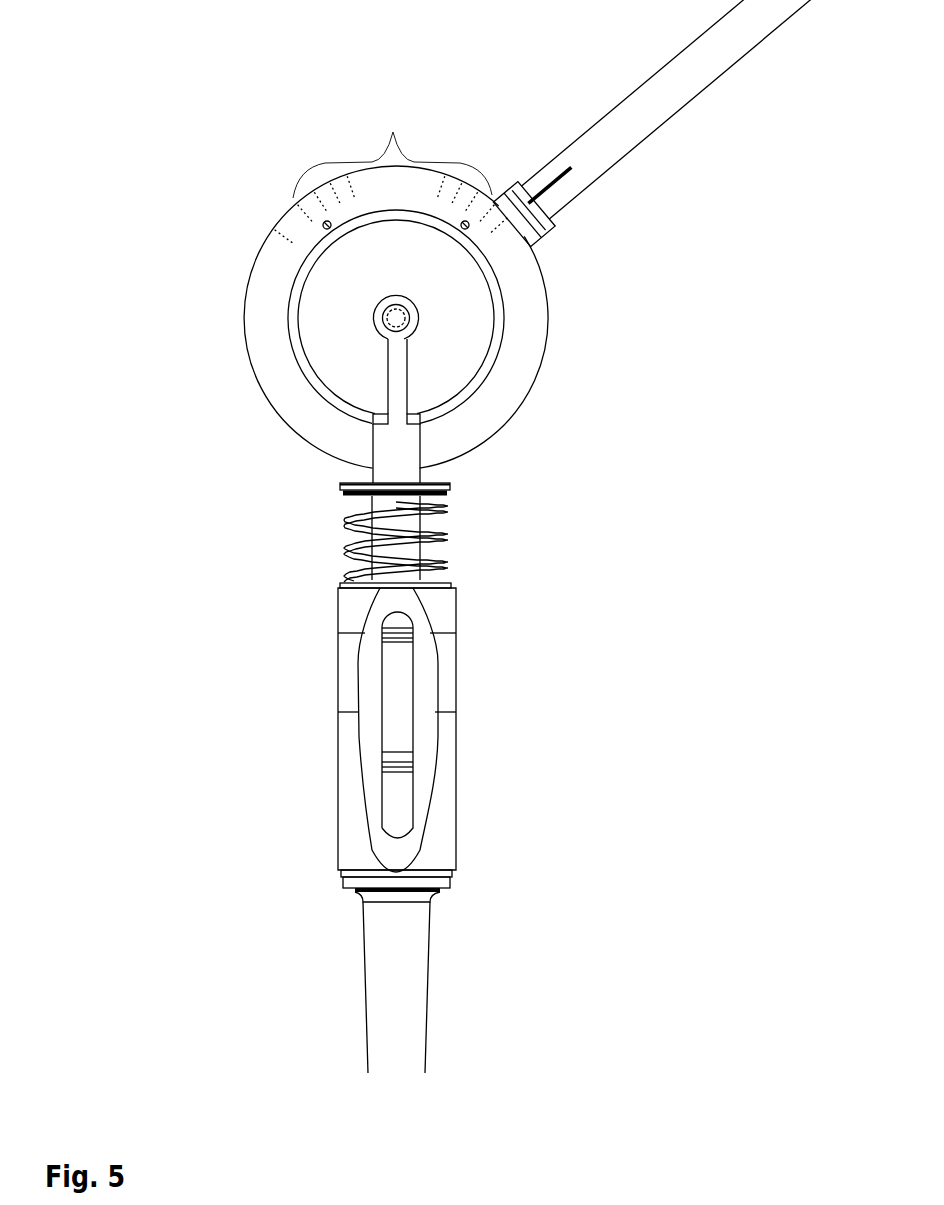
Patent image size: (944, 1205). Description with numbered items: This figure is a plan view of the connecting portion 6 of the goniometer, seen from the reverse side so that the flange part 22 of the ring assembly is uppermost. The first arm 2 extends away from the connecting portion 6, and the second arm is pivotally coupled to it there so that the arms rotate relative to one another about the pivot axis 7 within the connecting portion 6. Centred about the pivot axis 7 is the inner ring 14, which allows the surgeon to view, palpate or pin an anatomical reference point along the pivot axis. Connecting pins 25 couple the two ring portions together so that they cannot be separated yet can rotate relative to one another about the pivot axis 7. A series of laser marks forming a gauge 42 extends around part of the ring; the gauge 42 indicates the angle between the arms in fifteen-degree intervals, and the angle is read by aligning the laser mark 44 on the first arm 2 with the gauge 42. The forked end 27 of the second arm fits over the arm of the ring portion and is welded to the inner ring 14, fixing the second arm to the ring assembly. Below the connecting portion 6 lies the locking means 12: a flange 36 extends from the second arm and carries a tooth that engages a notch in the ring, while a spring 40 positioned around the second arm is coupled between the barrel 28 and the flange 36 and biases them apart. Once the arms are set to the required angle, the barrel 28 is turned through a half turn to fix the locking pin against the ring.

The first arm 2 is at (703, 55).
The laser mark 44 is at (555, 178).
The first flange part 22 is at (530, 330).
The gauge 42 is at (391, 170).
The connecting pins 25 is at (323, 225).
The connecting portion 6 is at (555, 422).
The inner ring 14 is at (373, 315).
The pivot axis 7 is at (385, 328).
The forked end 27 is at (382, 445).
The flange 36 is at (453, 485).
The spring 40 is at (435, 537).
The barrel 28 is at (347, 743).
The locking means 12 is at (490, 772).